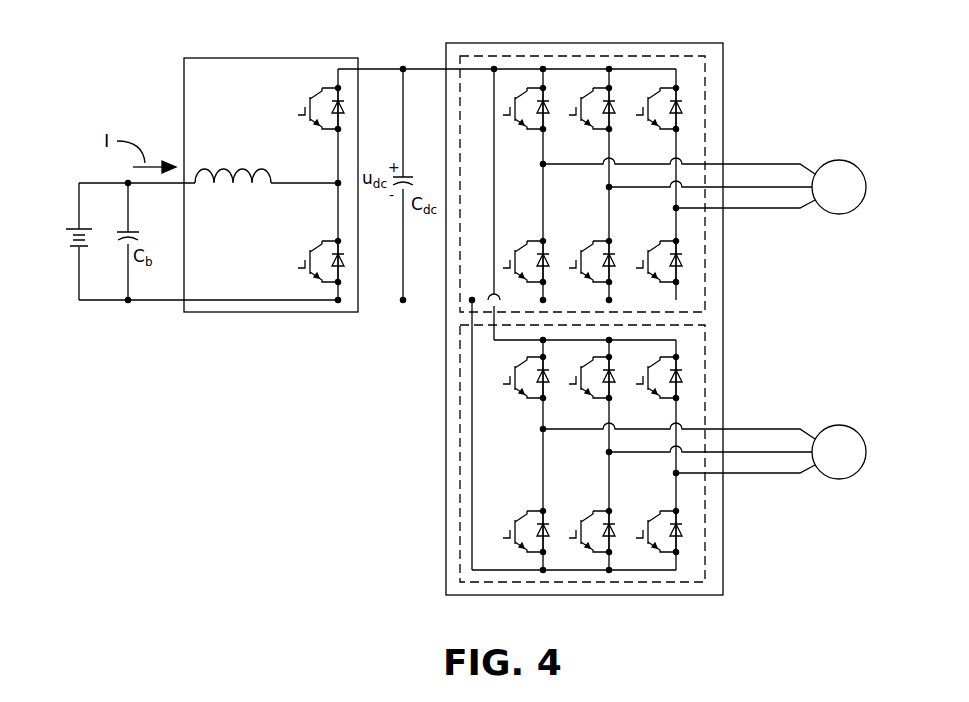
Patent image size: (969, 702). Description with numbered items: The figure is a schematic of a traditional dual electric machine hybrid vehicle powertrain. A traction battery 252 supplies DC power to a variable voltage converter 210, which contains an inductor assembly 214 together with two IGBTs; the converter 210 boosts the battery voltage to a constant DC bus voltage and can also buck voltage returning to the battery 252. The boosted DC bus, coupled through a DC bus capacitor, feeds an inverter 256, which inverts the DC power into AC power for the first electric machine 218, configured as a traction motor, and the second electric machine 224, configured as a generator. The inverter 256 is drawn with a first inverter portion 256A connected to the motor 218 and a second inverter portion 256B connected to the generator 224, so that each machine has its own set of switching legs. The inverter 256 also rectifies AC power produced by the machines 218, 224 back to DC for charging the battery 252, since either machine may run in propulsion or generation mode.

The traction battery 252 is at (78, 226).
The variable voltage converter 210 is at (271, 167).
The inductor assembly 214 is at (208, 168).
The inverter 256 is at (630, 301).
The first inverter 256A is at (705, 75).
The second inverter 256B is at (705, 370).
The first electric machine 218 is at (838, 160).
The second electric machine 224 is at (838, 425).